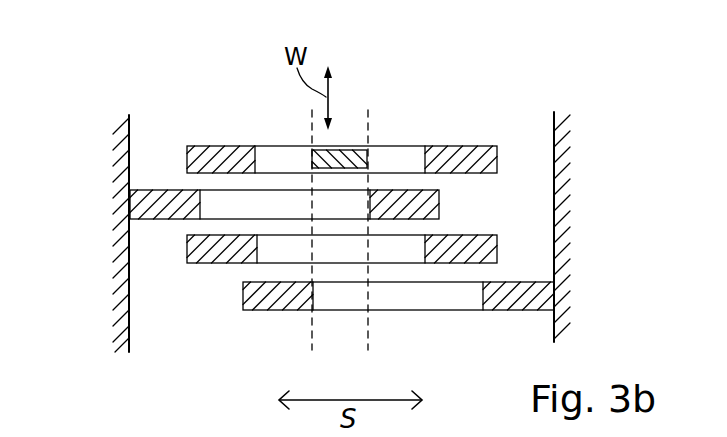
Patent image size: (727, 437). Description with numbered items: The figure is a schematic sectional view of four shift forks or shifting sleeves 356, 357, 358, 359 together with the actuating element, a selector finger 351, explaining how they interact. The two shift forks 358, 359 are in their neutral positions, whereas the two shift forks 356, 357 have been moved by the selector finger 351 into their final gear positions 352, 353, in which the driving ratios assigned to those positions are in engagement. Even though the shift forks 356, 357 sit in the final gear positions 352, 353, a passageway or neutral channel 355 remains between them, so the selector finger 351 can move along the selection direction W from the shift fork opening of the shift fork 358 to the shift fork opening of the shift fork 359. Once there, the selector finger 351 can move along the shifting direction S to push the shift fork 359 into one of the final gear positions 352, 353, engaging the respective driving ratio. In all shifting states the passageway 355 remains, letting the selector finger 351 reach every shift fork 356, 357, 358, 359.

The selector finger 351 is at (347, 156).
The final gear position 352 is at (126, 262).
The final gear position 353 is at (558, 318).
The passageway or neutral channel 355 is at (338, 325).
The shift fork or shifting sleeve 356 is at (140, 200).
The shift fork or shifting sleeve 357 is at (552, 285).
The shift fork or shifting sleeve 358 is at (214, 146).
The shift fork or shifting sleeve 359 is at (497, 244).